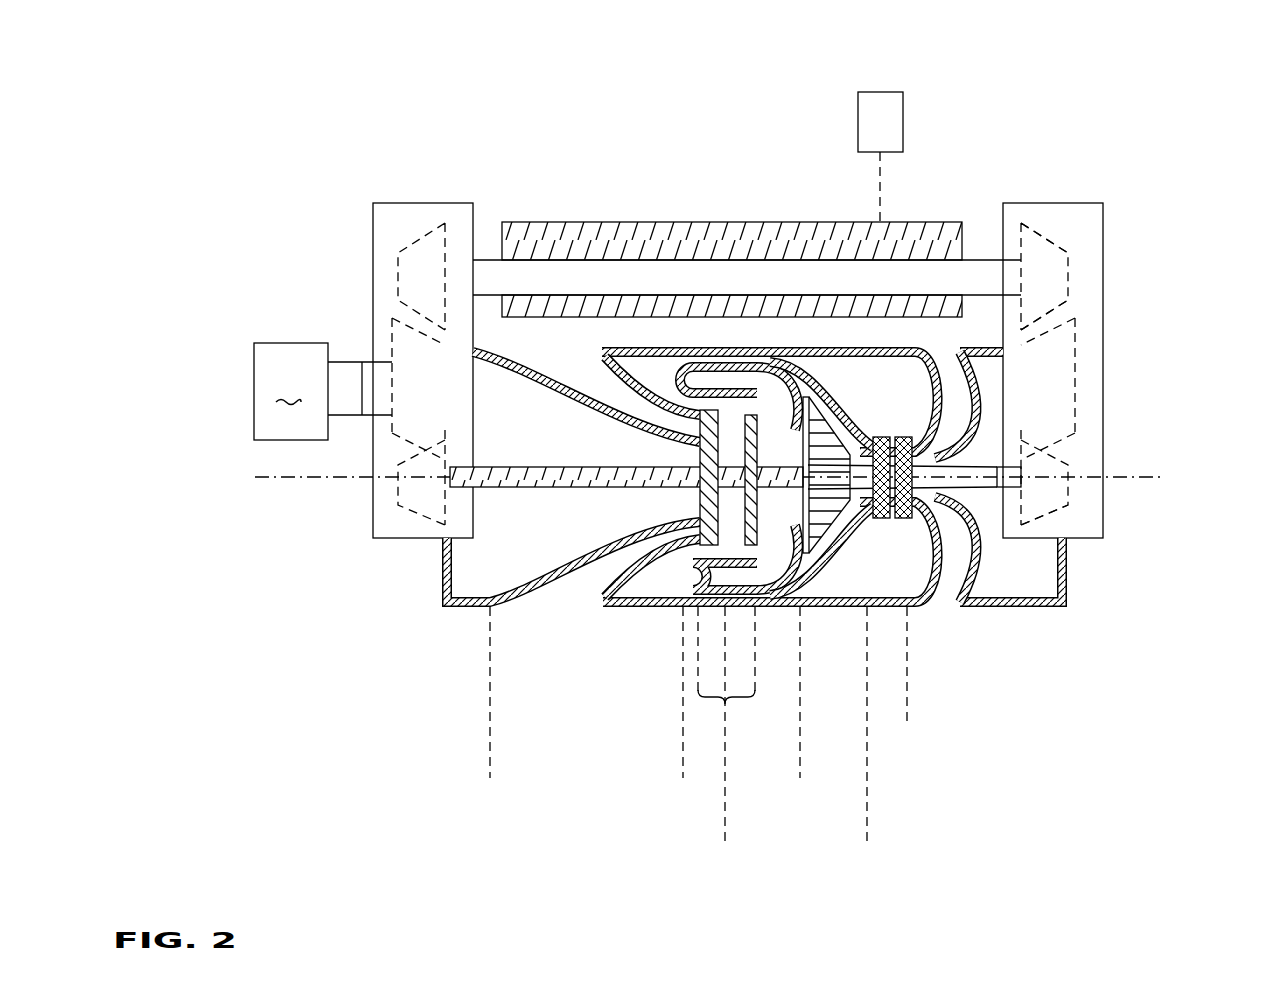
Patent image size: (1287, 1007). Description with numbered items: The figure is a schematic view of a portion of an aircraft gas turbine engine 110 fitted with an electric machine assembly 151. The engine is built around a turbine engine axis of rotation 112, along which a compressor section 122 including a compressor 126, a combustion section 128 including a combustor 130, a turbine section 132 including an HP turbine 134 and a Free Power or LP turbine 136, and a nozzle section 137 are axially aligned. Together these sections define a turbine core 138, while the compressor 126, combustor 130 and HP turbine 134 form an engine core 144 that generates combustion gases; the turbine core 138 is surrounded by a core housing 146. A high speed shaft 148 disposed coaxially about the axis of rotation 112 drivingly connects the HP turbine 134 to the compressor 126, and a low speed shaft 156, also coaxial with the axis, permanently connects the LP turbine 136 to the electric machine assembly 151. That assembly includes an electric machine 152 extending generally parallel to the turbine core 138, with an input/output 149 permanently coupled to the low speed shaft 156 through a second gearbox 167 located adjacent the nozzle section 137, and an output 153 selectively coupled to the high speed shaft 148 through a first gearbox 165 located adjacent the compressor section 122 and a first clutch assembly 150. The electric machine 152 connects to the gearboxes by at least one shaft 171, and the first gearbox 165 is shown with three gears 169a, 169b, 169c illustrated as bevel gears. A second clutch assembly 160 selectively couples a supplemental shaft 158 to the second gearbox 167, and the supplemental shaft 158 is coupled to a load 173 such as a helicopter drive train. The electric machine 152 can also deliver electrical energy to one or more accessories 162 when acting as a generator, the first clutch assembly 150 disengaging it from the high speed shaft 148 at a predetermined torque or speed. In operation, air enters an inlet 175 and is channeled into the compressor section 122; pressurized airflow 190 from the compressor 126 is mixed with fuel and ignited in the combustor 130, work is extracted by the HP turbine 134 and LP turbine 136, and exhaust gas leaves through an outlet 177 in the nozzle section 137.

The gas turbine engine 110 is at (791, 72).
The turbine engine axis of rotation 112 is at (318, 482).
The compressor section 122 is at (800, 720).
The compressor 126 is at (800, 702).
The combustion section 128 is at (683, 775).
The combustor 130 is at (674, 595).
The turbine section 132 is at (725, 700).
The HP turbine 134 is at (725, 657).
The LP turbine 136 is at (718, 672).
The nozzle section 137 is at (490, 775).
The turbine core 138 is at (907, 880).
The engine core 144 is at (867, 842).
The core housing 146 is at (714, 347).
The high speed shaft 148 is at (982, 490).
The input/output 149 is at (498, 258).
The first clutch assembly 150 is at (1021, 466).
The electric machine assembly 151 is at (674, 207).
The electric machine 152 is at (703, 222).
The output 153 is at (962, 258).
The low speed shaft 156 is at (530, 488).
The supplemental shaft 158 is at (345, 362).
The second clutch assembly 160 is at (368, 362).
The accessories 162 is at (880, 157).
The first gearbox 165 is at (1040, 203).
The second gearbox 167 is at (424, 203).
The gear 169a is at (1103, 272).
The gear 169b is at (1103, 337).
The gear 169c is at (1103, 455).
The shaft 171 is at (977, 257).
The load 173 is at (291, 391).
The inlet 175 is at (962, 600).
The outlet 177 is at (618, 598).
The pressurized airflow 190 is at (936, 521).